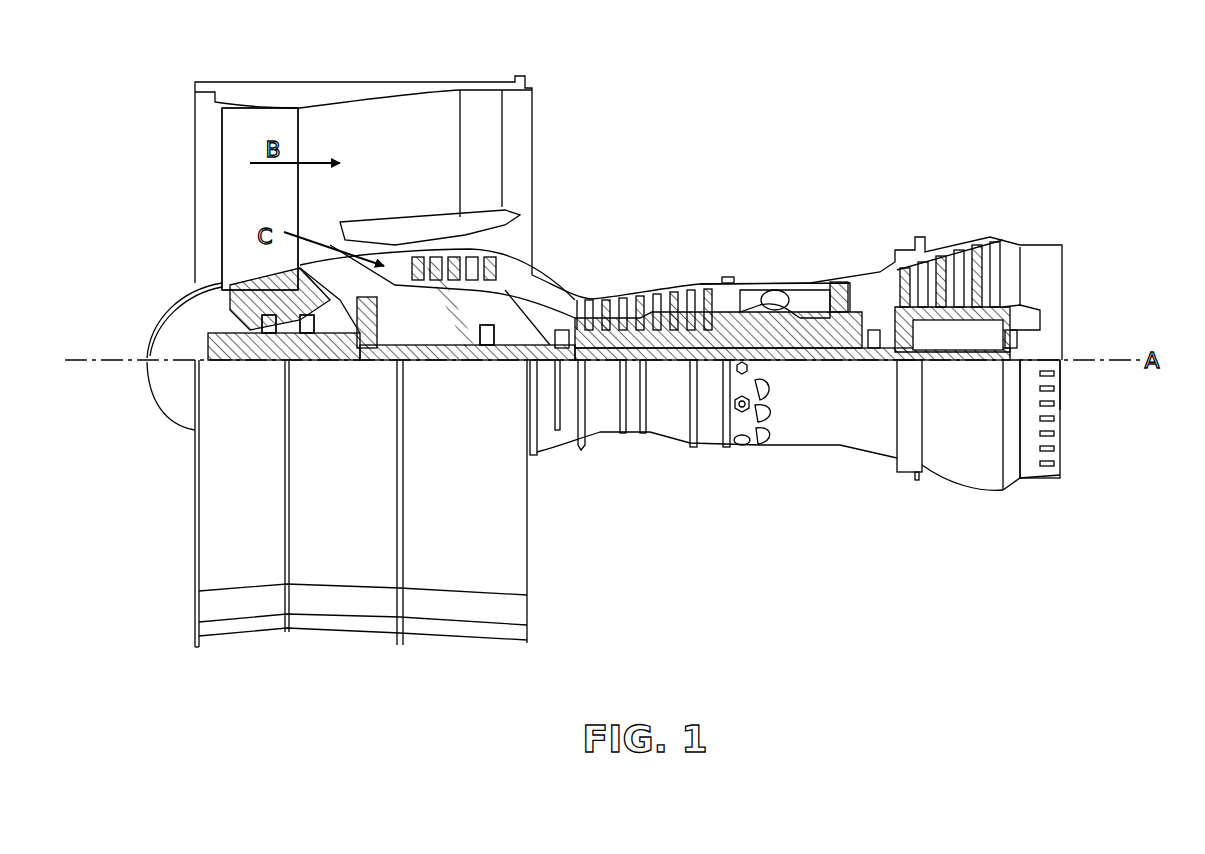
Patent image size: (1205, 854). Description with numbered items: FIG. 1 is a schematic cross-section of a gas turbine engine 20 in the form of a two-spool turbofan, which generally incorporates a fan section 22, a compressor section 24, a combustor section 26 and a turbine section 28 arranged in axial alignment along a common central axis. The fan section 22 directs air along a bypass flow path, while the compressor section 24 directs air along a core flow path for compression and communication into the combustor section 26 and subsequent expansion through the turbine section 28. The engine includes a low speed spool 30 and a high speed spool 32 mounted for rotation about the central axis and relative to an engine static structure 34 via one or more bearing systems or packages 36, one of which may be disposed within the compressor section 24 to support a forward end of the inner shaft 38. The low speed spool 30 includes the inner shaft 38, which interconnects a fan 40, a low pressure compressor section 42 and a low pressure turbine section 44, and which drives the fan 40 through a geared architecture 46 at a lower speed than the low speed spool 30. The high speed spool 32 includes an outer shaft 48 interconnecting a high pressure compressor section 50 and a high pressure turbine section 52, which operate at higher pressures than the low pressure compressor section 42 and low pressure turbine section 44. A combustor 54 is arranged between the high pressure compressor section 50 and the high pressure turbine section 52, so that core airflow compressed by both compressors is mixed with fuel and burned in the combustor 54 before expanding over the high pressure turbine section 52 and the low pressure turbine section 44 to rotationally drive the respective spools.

The gas turbine engine 20 is at (1006, 127).
The fan section 22 is at (387, 68).
The compressor section 24 is at (583, 262).
The combustor section 26 is at (760, 240).
The turbine section 28 is at (899, 215).
The low speed spool 30 is at (843, 364).
The high speed spool 32 is at (673, 362).
The engine static structure 34 is at (710, 443).
The bearing systems or packages 36 is at (474, 362).
The inner shaft 38 is at (553, 362).
The fan 40 is at (236, 205).
The low pressure compressor section 42 is at (468, 262).
The low pressure turbine section 44 is at (950, 262).
The geared architecture 46 is at (355, 362).
The outer shaft 48 is at (787, 362).
The high pressure compressor section 50 is at (645, 293).
The high pressure turbine section 52 is at (839, 279).
The combustor 54 is at (775, 305).